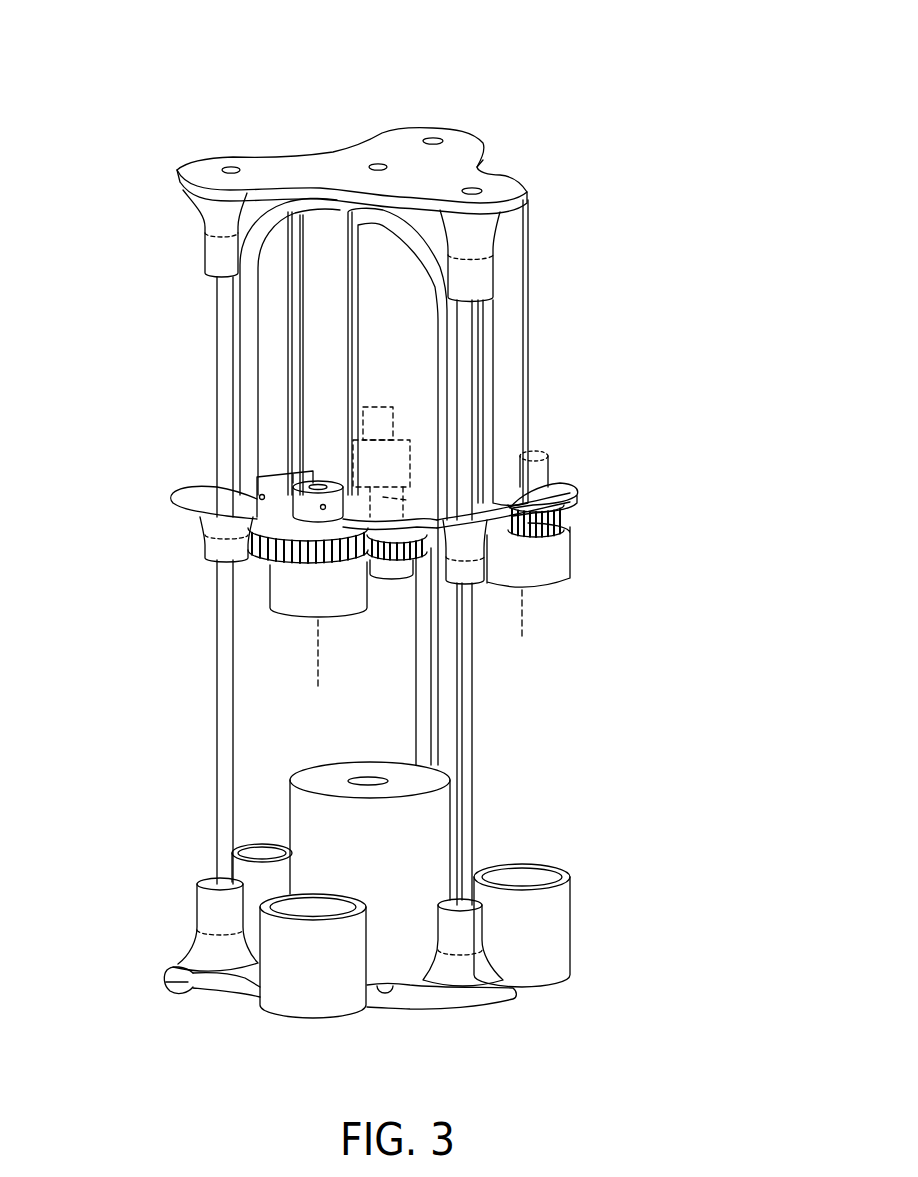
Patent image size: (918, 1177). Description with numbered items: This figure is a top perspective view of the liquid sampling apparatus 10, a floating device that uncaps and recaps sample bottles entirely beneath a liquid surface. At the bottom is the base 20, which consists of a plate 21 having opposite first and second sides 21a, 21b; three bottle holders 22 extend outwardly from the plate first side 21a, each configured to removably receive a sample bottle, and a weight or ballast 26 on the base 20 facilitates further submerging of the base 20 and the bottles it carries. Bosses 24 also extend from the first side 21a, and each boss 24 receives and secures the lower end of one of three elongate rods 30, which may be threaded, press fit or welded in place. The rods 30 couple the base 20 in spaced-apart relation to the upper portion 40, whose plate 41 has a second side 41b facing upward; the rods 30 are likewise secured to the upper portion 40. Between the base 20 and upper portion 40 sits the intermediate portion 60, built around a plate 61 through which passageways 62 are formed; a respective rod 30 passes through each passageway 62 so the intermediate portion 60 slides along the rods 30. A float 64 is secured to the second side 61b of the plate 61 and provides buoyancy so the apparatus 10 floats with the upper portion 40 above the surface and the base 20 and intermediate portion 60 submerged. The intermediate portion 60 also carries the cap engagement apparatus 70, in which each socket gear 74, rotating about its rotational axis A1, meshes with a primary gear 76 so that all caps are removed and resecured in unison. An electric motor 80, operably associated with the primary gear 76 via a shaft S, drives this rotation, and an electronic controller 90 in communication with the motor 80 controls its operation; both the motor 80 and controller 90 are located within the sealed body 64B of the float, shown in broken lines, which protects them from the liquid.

The liquid sampling apparatus 10 is at (459, 92).
The upper portion 40 is at (540, 141).
The plate 41 is at (178, 180).
The second side 41b is at (308, 163).
The float 64 is at (515, 310).
The float body 64B is at (512, 260).
The elongate rods 30 is at (220, 695).
The intermediate portion 60 is at (590, 460).
The plate 61 is at (577, 492).
The second side 61b is at (190, 488).
The passageways 62 is at (217, 480).
The electronic controller 90 is at (380, 407).
The electric motor 80 is at (393, 450).
The shaft S is at (405, 496).
The cap engagement apparatus 70 is at (608, 538).
The gear 74 is at (563, 517).
The primary gear 76 is at (413, 565).
The rotational axis A1 is at (563, 623).
The base 20 is at (580, 823).
The plate 21 is at (247, 992).
The first side 21a is at (390, 997).
The second side 21b is at (187, 970).
The bottle holders 22 is at (247, 847).
The bosses 24 is at (202, 900).
The weight or ballast 26 is at (330, 773).